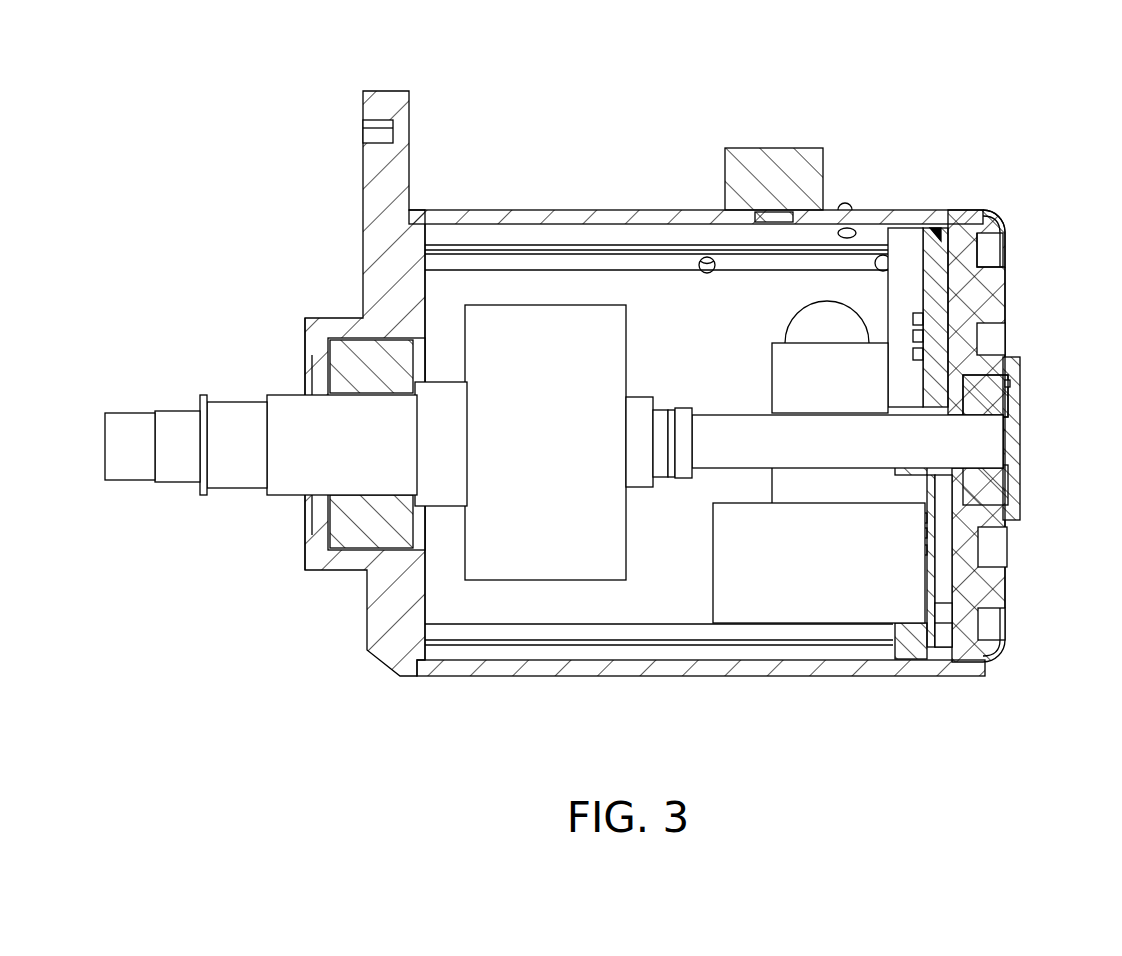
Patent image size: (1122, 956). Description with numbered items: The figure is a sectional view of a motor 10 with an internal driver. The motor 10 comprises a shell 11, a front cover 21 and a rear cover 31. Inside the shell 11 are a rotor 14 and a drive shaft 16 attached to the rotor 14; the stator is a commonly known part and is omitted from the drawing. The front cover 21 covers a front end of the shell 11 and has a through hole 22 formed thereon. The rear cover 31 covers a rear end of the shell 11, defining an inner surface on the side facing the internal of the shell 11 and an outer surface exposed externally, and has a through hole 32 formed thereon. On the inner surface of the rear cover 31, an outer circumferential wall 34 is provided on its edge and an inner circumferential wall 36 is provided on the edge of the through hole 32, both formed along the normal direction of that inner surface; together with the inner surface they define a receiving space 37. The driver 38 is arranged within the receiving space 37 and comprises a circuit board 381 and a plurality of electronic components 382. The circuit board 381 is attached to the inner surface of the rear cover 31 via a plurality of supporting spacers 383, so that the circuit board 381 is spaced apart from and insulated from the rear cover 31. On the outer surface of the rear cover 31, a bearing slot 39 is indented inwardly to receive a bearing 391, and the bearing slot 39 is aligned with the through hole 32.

The motor 10 is at (640, 130).
The shell 11 is at (530, 210).
The rotor 14 is at (537, 582).
The drive shaft 16 is at (272, 393).
The front cover 21 is at (363, 239).
The through hole 22 is at (303, 377).
The rear cover 31 is at (1010, 327).
The through hole 32 is at (1010, 342).
The outer circumferential wall 34 is at (913, 223).
The inner circumferential wall 36 is at (1008, 297).
The receiving space 37 is at (950, 303).
The driver 38 is at (938, 232).
The circuit board 381 is at (972, 245).
The electronic components 382 is at (917, 313).
The supporting spacers 383 is at (944, 650).
The bearing slot 39 is at (1007, 363).
The bearing 391 is at (988, 400).